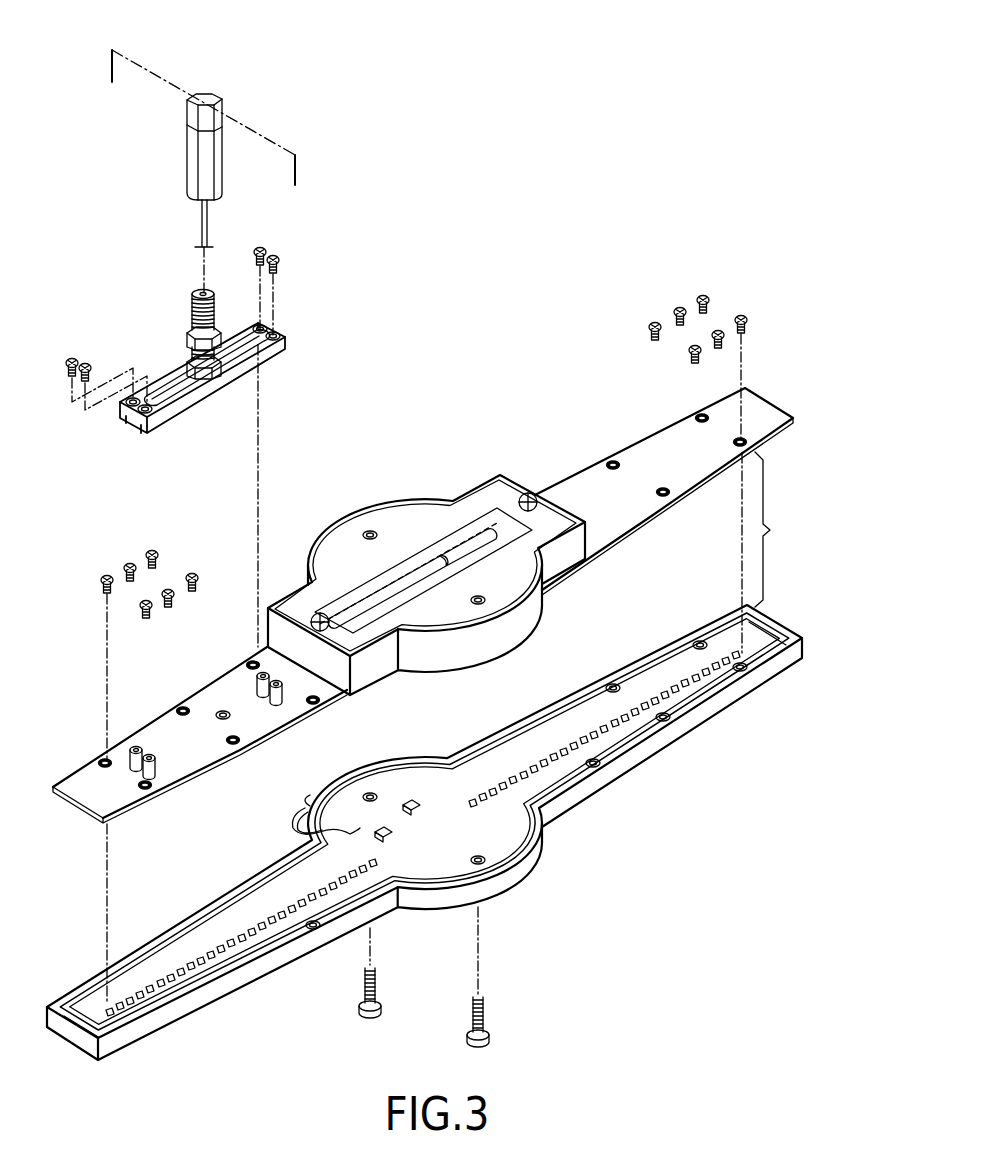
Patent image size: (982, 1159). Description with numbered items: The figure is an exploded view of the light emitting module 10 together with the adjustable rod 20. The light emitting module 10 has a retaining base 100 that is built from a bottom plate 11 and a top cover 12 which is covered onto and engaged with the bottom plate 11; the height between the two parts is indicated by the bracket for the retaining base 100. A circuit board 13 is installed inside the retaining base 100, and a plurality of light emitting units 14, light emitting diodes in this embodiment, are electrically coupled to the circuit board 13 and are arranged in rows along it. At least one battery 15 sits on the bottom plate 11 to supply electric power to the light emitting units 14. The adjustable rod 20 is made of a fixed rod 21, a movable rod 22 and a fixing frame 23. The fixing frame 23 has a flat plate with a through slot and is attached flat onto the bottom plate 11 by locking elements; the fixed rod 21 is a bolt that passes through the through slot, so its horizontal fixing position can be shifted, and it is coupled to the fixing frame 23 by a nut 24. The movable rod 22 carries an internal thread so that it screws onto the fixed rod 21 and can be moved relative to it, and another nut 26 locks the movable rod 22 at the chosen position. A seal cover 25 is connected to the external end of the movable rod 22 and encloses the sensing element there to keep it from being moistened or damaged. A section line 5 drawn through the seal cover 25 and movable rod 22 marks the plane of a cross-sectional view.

The section line 5 is at (110, 83).
The light emitting module 10 is at (545, 335).
The bottom plate 11 is at (652, 450).
The top cover 12 is at (702, 712).
The circuit board 13 is at (610, 742).
The light emitting units 14 is at (672, 690).
The battery 15 is at (482, 540).
The adjustable rod 20 is at (320, 108).
The fixed rod 21 is at (200, 287).
The movable rod 22 is at (192, 148).
The fixing frame 23 is at (167, 433).
The nut 24 is at (187, 360).
The seal cover 25 is at (203, 92).
The nut 26 is at (187, 330).
The retaining base 100 is at (784, 529).